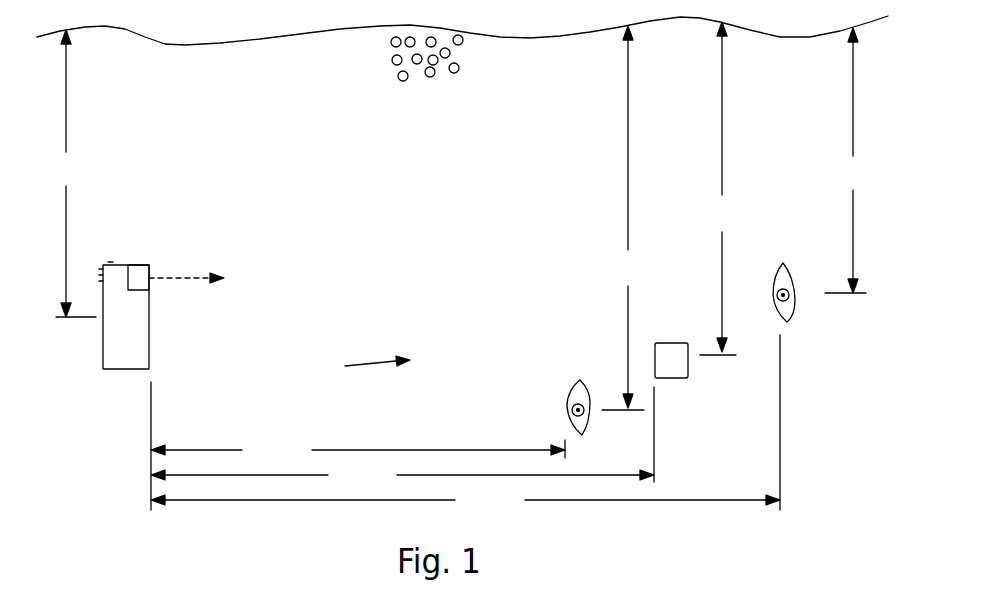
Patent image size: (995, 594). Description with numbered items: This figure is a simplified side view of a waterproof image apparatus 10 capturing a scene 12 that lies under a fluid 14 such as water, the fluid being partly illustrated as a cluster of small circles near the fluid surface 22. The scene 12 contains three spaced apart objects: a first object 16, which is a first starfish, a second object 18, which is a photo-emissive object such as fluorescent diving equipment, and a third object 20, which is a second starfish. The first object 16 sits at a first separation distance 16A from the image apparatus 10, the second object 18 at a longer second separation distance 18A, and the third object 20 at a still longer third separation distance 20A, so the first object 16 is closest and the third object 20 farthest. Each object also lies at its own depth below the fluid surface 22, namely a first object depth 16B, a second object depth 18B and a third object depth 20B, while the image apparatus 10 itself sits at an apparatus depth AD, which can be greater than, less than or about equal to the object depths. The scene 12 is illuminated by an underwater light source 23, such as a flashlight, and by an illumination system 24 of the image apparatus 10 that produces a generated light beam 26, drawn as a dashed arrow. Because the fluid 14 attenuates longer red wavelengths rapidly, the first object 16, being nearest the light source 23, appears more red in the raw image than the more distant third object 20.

The image apparatus 10 is at (156, 362).
The scene 12 is at (353, 373).
The fluid 14 is at (391, 60).
The first object 16 is at (565, 390).
The second object 18 is at (675, 372).
The third object 20 is at (784, 262).
The fluid surface 22 is at (280, 38).
The underwater light source 23 is at (140, 251).
The illumination system 24 is at (150, 270).
The generated light beam 26 is at (186, 284).
The apparatus depth AD is at (72, 173).
The first separation distance 16A is at (358, 450).
The first object depth 16B is at (629, 218).
The second separation distance 18A is at (402, 475).
The second object depth 18B is at (722, 188).
The third separation distance 20A is at (465, 500).
The third object depth 20B is at (854, 160).